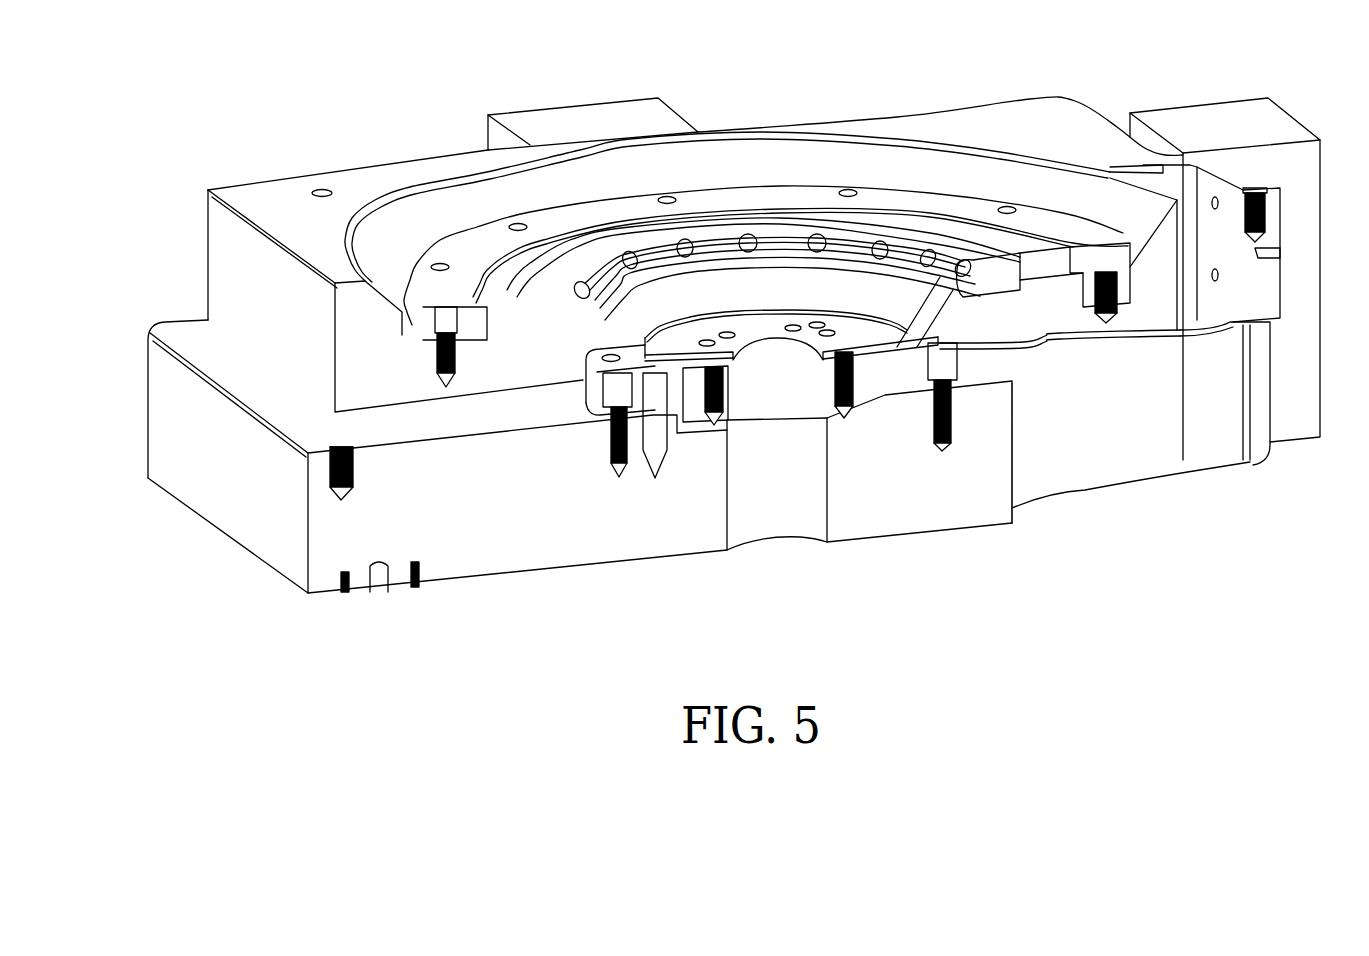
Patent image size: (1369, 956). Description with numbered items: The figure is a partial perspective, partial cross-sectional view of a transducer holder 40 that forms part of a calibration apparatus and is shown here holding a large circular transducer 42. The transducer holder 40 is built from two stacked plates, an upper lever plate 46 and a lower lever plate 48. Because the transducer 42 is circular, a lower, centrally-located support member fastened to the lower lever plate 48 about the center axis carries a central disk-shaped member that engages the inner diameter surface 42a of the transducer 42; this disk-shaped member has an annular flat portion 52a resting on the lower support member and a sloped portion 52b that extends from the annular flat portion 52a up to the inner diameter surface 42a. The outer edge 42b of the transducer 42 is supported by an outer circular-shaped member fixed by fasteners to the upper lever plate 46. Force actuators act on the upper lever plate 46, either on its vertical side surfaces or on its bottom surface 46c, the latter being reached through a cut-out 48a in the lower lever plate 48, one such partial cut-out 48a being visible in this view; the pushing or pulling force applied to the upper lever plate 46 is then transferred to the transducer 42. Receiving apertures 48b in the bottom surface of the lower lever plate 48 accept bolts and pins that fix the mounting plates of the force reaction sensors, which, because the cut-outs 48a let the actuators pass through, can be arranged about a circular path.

The transducer holder 40 is at (713, 350).
The large circular transducer 42 is at (830, 329).
The inner diameter surface 42a is at (973, 317).
The outer edge 42b is at (1040, 337).
The upper lever plate 46 is at (742, 333).
The bottom surface 46c is at (985, 300).
The lower lever plate 48 is at (688, 483).
The cut-out 48a is at (1147, 437).
The receiving apertures 48b is at (346, 600).
The annular flat portion 52a is at (861, 333).
The sloped portion 52b is at (832, 287).